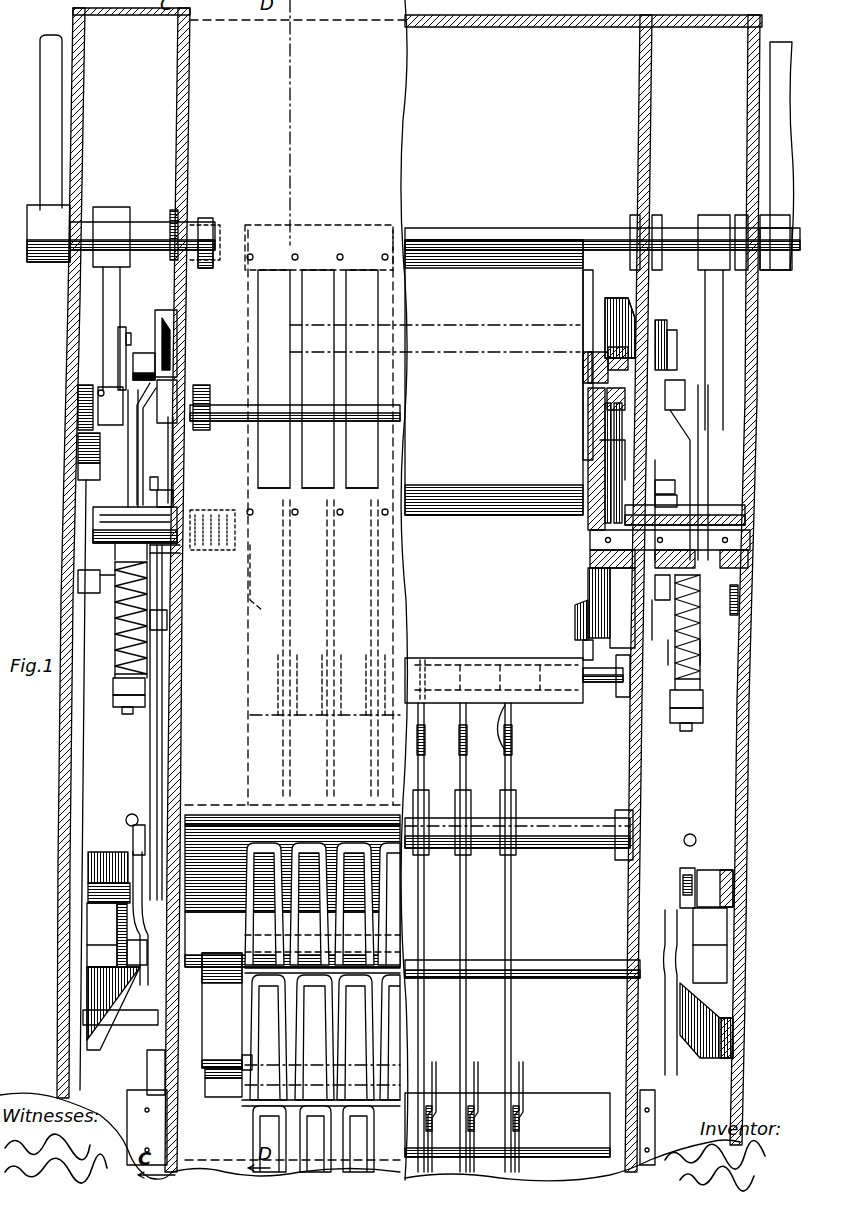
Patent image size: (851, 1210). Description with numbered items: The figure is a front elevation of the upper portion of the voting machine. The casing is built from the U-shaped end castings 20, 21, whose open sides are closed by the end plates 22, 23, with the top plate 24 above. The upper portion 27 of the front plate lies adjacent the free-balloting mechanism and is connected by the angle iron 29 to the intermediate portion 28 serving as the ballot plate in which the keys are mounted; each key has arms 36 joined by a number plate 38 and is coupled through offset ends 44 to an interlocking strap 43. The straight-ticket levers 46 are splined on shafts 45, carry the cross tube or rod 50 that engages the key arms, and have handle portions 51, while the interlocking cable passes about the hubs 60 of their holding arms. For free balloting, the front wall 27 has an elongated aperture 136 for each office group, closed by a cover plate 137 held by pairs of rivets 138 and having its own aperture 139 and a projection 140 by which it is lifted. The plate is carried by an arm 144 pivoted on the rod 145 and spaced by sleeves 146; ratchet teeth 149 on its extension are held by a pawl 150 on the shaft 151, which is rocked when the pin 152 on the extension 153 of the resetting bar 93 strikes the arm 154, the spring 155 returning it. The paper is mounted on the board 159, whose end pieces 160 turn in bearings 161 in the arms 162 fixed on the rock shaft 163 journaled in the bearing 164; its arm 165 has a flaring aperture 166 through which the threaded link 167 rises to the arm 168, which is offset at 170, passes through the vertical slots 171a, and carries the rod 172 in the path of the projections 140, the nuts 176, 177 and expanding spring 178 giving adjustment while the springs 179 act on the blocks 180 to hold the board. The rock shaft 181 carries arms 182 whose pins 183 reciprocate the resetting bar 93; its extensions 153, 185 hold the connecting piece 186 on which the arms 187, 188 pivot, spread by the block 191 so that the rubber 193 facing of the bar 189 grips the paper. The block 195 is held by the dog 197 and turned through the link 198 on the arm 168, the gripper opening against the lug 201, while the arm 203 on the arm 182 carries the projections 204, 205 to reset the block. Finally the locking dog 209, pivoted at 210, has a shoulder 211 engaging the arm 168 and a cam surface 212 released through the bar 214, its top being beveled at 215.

The end casting 20 is at (160, 762).
The end casting 21 is at (645, 752).
The end plate 22 is at (62, 770).
The end plate 23 is at (750, 755).
The top plate 24 is at (583, 13).
The upper portion of front plate 27 is at (295, 402).
The intermediate portion of front plate 28 is at (322, 1034).
The angle iron 29 is at (292, 896).
The arm of key 36 is at (332, 900).
The number plate 38 is at (305, 840).
The interlocking strap 43 is at (480, 1063).
The offset 44 is at (522, 1122).
The shaft 45 is at (262, 1045).
The straight-ticket lever 46 is at (222, 1010).
The tube or rod 50 is at (268, 985).
The handle portion 51 is at (223, 1082).
The hub of arm 60 is at (145, 1065).
The resetting bar 93 is at (84, 760).
The elongated rectangular aperture 136 is at (265, 260).
The cover plate 137 is at (316, 375).
The rivets 138 is at (348, 260).
The aperture in cover plate 139 is at (250, 622).
The projection 140 is at (318, 470).
The arm 144 is at (512, 758).
The rod 145 is at (605, 685).
The sleeves 146 is at (478, 660).
The ratchet teeth 149 is at (473, 848).
The pawl 150 is at (500, 808).
The shaft 151 is at (565, 848).
The pin 152 is at (105, 975).
The extension of resetting bar 153 is at (108, 1030).
The arm 154 is at (152, 740).
The spring 155 is at (167, 615).
The board 159 is at (436, 377).
The end pieces 160 is at (590, 305).
The bearings 161 is at (590, 370).
The arms 162 is at (585, 450).
The rock shaft 163 is at (588, 580).
The bearing 164 is at (615, 610).
The arm 165 is at (670, 615).
The aperture 166 is at (178, 570).
The link 167 is at (125, 515).
The arm 168 is at (158, 340).
The offset 170 is at (170, 420).
The vertical slots 171a is at (210, 260).
The rod 172 is at (272, 405).
The abutment nut 176 is at (113, 685).
The set nut 177 is at (113, 700).
The helically-coiled expanding spring 178 is at (112, 643).
The springs 179 is at (235, 565).
The elongated rectangular blocks 180 is at (608, 355).
The rock shaft 181 is at (153, 225).
The arm 182 is at (118, 283).
The pins 183 is at (100, 385).
The extension of resetting bar 185 is at (105, 852).
The connecting piece 186 is at (117, 955).
The arm 187 is at (143, 918).
The arm 188 is at (125, 940).
The bar 189 is at (150, 1120).
The block 191 is at (130, 835).
The rubber facing 193 is at (507, 1125).
The rectangular elongated block 195 is at (157, 498).
The dog 197 is at (150, 483).
The link 198 is at (172, 452).
The lug 201 is at (80, 600).
The arm 203 is at (118, 437).
The projection 204 is at (740, 598).
The projection 205 is at (160, 640).
The locking dog 209 is at (563, 620).
The pivot 210 is at (590, 535).
The shoulder 211 is at (665, 340).
The cam surface 212 is at (583, 648).
The bar 214 is at (494, 681).
The bevel 215 is at (635, 318).